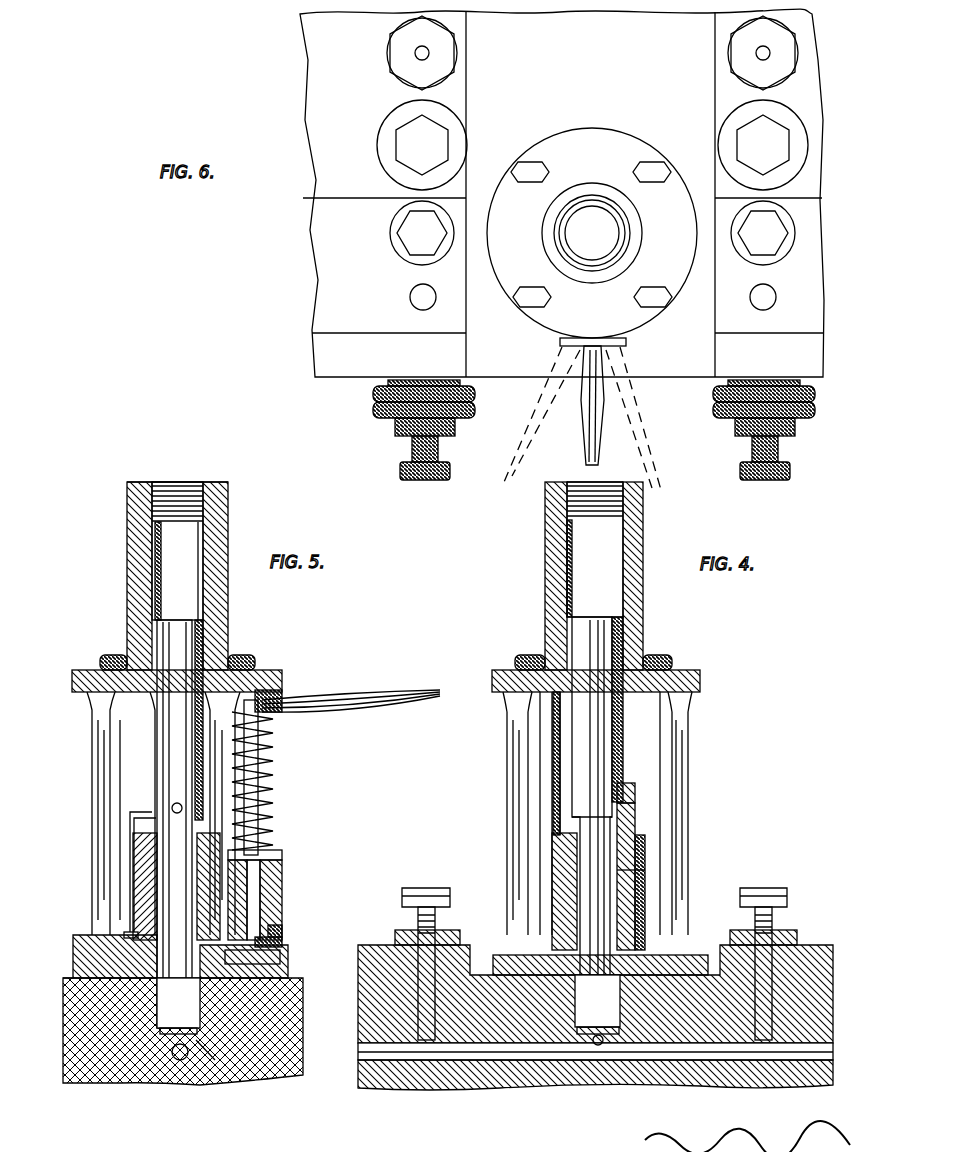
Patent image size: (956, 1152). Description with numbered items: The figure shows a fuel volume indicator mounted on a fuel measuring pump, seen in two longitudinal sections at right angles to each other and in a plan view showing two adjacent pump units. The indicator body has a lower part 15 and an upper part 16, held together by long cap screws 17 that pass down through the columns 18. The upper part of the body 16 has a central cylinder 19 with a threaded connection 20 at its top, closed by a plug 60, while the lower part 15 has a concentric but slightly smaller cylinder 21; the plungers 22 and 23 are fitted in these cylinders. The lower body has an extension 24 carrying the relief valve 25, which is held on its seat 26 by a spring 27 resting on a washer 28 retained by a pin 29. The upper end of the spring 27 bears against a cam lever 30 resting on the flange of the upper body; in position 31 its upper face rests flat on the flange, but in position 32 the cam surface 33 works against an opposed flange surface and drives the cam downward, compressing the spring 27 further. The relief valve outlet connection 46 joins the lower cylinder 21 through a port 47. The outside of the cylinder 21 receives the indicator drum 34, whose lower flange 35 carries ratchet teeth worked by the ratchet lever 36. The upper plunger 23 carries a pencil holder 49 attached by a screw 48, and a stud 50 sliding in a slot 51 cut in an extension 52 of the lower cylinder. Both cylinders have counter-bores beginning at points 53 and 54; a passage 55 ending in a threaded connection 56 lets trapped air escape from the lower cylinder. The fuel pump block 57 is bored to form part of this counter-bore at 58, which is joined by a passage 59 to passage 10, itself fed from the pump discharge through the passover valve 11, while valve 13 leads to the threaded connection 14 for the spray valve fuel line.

In FIG. 5, the passage 10 is at (184, 1058).
In FIG. 4, the passage 10 is at (605, 1042).
In FIG. 6, the valve 11 is at (432, 222).
In FIG. 4, the valve 11 is at (775, 1050).
In FIG. 6, the valve 13 is at (408, 472).
In FIG. 6, the threaded connection 14 is at (416, 297).
In FIG. 5, the lower part of the volume indicator body 15 is at (110, 1010).
In FIG. 4, the lower part of the volume indicator body 15 is at (716, 960).
In FIG. 5, the upper part of the body 16 is at (216, 540).
In FIG. 4, the upper part of the body 16 is at (698, 675).
In FIG. 6, the cap screws 17 is at (530, 170).
In FIG. 5, the cap screws 17 is at (230, 660).
In FIG. 4, the cap screws 17 is at (658, 660).
In FIG. 5, the columns 18 is at (95, 797).
In FIG. 4, the columns 18 is at (518, 762).
In FIG. 5, the cylinder 19 is at (210, 522).
In FIG. 4, the cylinder 19 is at (630, 535).
In FIG. 5, the threaded connection 20 is at (190, 500).
In FIG. 4, the threaded connection 20 is at (612, 498).
In FIG. 5, the cylinder 21 is at (175, 905).
In FIG. 4, the cylinder 21 is at (556, 836).
In FIG. 5, the plunger 22 is at (143, 921).
In FIG. 4, the plunger 22 is at (638, 798).
In FIG. 6, the plunger 23 is at (582, 217).
In FIG. 5, the plunger 23 is at (212, 628).
In FIG. 4, the plunger 23 is at (626, 645).
In FIG. 5, the extension 24 is at (280, 940).
In FIG. 5, the relief valve 25 is at (270, 865).
In FIG. 5, the seat 26 is at (120, 950).
In FIG. 5, the spring 27 is at (272, 790).
In FIG. 5, the washer 28 is at (248, 862).
In FIG. 5, the pin 29 is at (268, 850).
In FIG. 6, the cam lever 30 is at (585, 446).
In FIG. 5, the cam lever 30 is at (285, 692).
In FIG. 6, the lever position 31 is at (633, 418).
In FIG. 6, the lever position 32 is at (542, 414).
In FIG. 5, the cam surface 33 is at (262, 690).
In FIG. 5, the indicator drum 34 is at (140, 880).
In FIG. 4, the indicator drum 34 is at (646, 840).
In FIG. 5, the flange 35 is at (282, 900).
In FIG. 4, the ratchet lever 36 is at (470, 945).
In FIG. 5, the relief valve outlet connection 46 is at (278, 928).
In FIG. 5, the port 47 is at (272, 962).
In FIG. 5, the screw 48 is at (145, 812).
In FIG. 5, the pencil holder 49 is at (132, 855).
In FIG. 5, the stud 50 is at (200, 800).
In FIG. 4, the stud 50 is at (562, 808).
In FIG. 4, the slot 51 is at (568, 712).
In FIG. 4, the extension 52 is at (556, 737).
In FIG. 4, the counter-bore starting point 53 is at (622, 630).
In FIG. 4, the counter-bore starting point 54 is at (604, 817).
In FIG. 4, the passage 55 is at (625, 868).
In FIG. 4, the threaded connection 56 is at (640, 795).
In FIG. 5, the fuel pump block 57 is at (300, 1006).
In FIG. 4, the fuel pump block 57 is at (805, 946).
In FIG. 5, the counter-bore portion 58 is at (170, 1040).
In FIG. 4, the counter-bore portion 58 is at (594, 1040).
In FIG. 5, the passage 59 is at (225, 1070).
In FIG. 4, the passage 59 is at (660, 1055).
In FIG. 5, the plug 60 is at (140, 484).